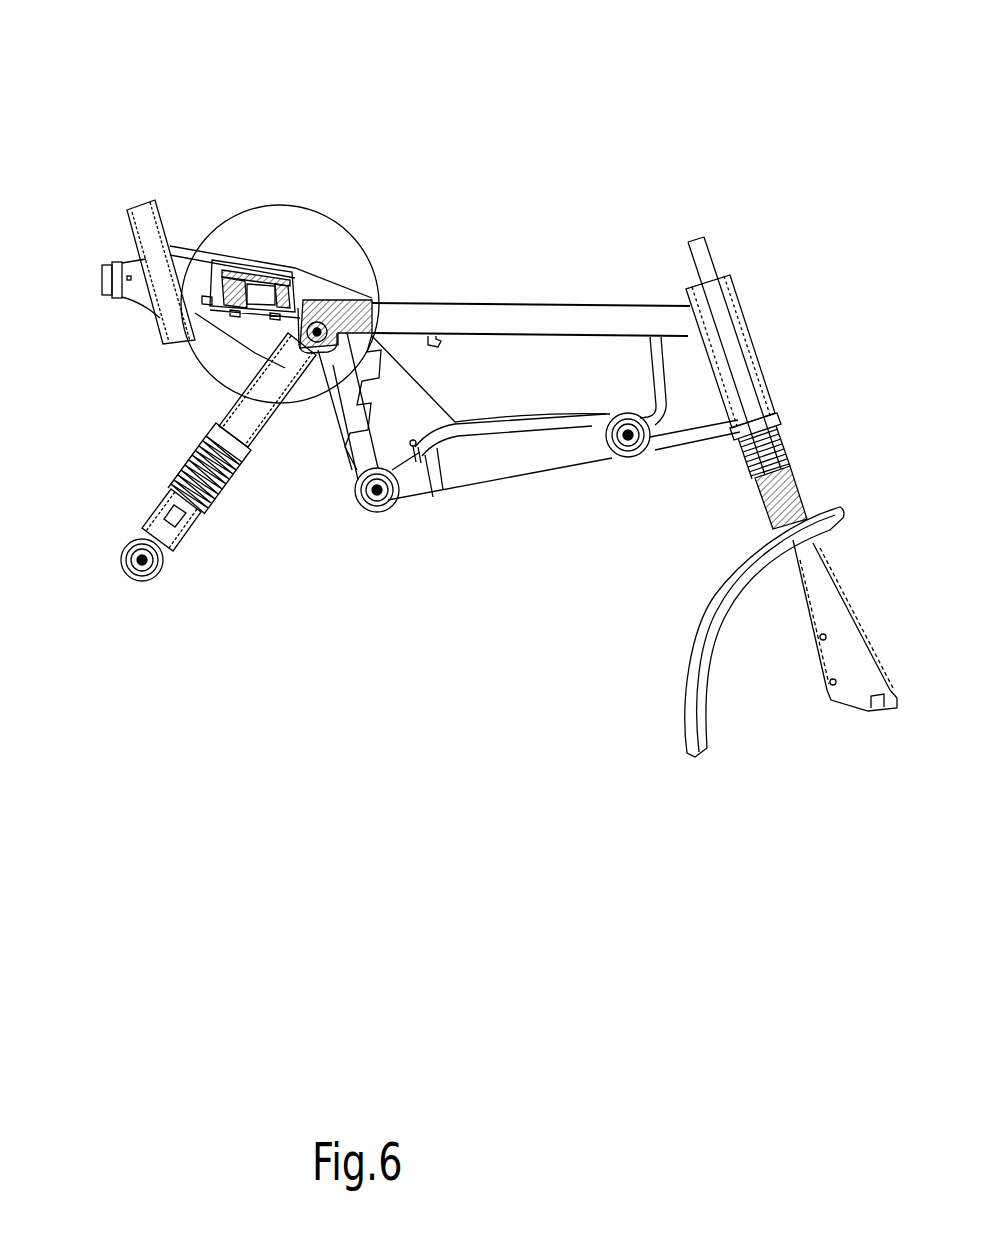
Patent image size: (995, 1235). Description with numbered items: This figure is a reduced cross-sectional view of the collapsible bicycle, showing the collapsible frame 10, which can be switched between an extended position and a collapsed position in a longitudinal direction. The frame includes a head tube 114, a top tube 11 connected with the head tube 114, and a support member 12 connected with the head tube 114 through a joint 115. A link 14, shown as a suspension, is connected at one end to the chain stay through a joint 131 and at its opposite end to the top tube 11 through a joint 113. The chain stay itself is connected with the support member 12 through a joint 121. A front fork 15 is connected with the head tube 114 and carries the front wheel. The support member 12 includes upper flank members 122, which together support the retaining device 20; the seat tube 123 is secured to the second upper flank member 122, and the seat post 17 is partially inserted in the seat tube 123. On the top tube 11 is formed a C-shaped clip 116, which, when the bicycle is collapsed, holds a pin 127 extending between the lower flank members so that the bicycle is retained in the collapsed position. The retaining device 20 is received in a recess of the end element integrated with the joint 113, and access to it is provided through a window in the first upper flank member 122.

The collapsible frame 10 is at (576, 107).
The top tube 11 is at (368, 300).
The support member 12 is at (480, 465).
The link 14 is at (237, 416).
The front fork 15 is at (802, 500).
The seat post 17 is at (110, 264).
The retaining device 20 is at (246, 222).
The joint 113 is at (316, 390).
The head tube 114 is at (748, 325).
The joint 115 is at (633, 458).
The C-shaped clip 116 is at (438, 332).
The joint 121 is at (377, 512).
The upper flank member 122 is at (286, 262).
The seat tube 123 is at (158, 198).
The pin 127 is at (420, 468).
The joint 131 is at (163, 577).